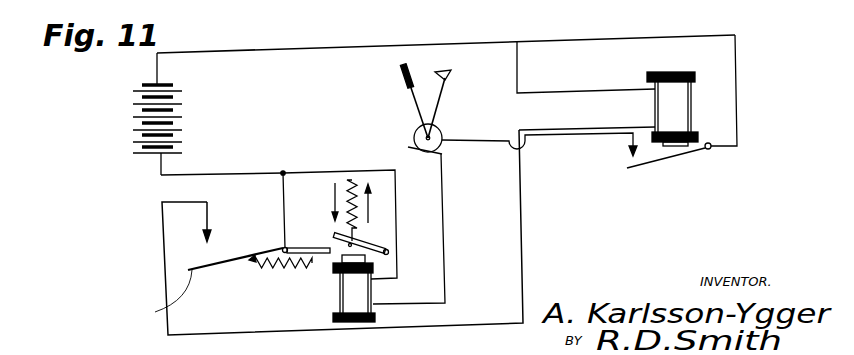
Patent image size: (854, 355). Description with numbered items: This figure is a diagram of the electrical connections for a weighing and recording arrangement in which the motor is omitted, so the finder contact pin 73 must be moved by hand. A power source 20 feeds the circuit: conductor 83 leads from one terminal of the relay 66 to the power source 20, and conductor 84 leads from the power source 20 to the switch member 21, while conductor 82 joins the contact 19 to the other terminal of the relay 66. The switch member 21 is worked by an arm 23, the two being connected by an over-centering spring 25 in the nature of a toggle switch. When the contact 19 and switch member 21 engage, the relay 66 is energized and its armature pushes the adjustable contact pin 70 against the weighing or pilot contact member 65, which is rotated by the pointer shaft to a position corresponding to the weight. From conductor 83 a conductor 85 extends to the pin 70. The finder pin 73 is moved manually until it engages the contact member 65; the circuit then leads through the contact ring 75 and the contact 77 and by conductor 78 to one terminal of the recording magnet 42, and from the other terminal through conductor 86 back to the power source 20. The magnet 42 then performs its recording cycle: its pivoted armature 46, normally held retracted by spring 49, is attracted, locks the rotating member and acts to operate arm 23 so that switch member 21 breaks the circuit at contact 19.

The contact 19 is at (211, 233).
The power source 20 is at (180, 117).
The switch member 21 is at (227, 267).
The arm 23 is at (323, 256).
The over-centering spring 25 is at (275, 268).
The magnet 42 is at (354, 288).
The armature 46 is at (388, 249).
The spring 49 is at (342, 178).
The contact member 65 is at (404, 78).
The relay 66 is at (672, 109).
The contact pin 70 is at (660, 160).
The contact pin 73 is at (450, 78).
The contact ring 75 is at (418, 130).
The contact 77 is at (431, 158).
The conductor 78 is at (447, 213).
The conductor 82 is at (526, 130).
The conductor 83 is at (294, 50).
The conductor 84 is at (283, 208).
The conductor 85 is at (740, 80).
The conductor 86 is at (397, 229).